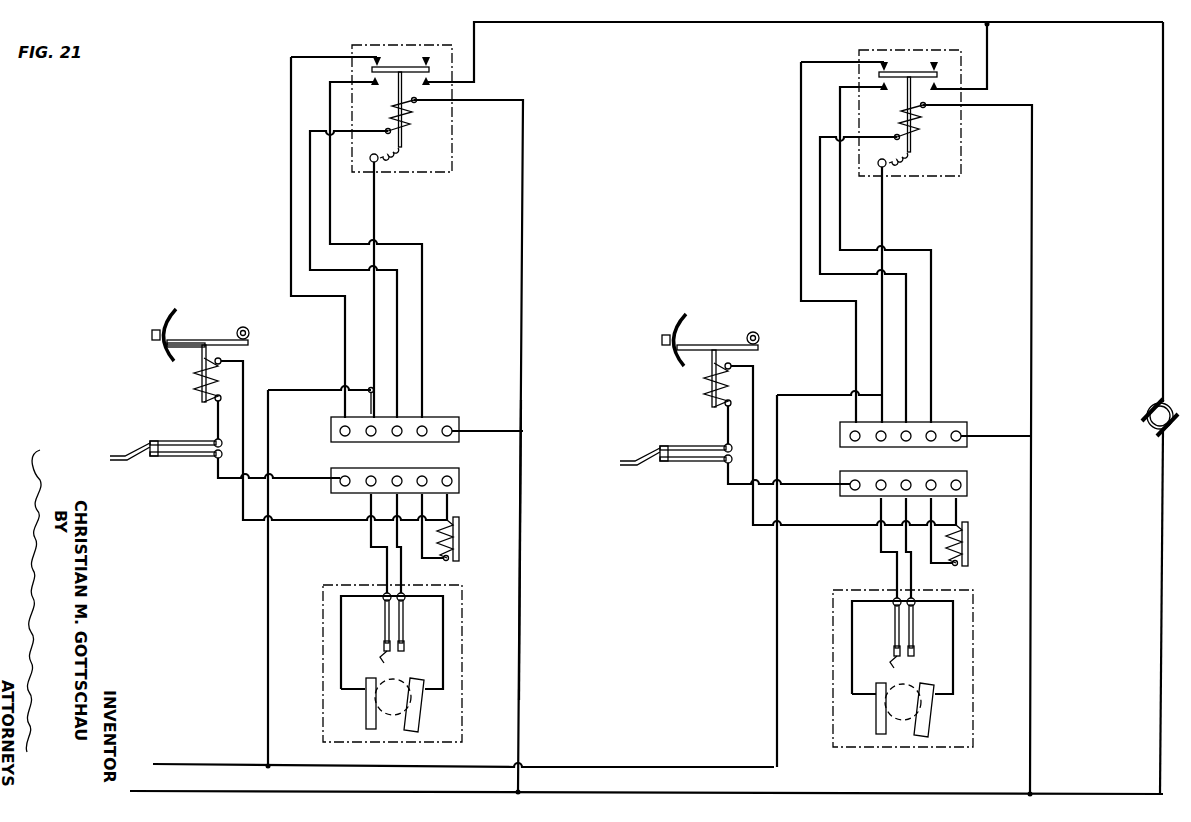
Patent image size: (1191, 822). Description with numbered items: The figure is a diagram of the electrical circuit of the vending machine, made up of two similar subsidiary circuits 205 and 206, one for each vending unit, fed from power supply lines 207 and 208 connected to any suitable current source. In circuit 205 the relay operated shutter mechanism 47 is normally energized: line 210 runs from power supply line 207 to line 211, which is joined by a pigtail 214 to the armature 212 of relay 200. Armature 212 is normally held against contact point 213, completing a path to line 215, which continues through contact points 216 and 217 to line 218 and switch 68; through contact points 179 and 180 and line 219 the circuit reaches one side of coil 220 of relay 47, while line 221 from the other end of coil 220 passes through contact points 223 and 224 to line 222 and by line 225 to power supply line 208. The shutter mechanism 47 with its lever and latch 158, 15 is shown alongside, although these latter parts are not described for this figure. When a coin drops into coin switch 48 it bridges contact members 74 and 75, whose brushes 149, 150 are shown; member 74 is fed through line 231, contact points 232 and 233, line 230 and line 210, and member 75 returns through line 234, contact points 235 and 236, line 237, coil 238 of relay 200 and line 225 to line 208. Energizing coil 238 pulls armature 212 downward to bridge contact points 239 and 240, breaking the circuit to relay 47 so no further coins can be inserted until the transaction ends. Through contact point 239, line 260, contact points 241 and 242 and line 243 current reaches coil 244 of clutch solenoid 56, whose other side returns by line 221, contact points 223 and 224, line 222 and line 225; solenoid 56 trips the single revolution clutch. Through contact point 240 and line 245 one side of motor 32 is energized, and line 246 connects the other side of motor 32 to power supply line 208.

The relay 200 is at (352, 46).
The contact point 213 is at (378, 56).
The contact point 240 is at (430, 80).
The line 260 is at (330, 110).
The contact point 239 is at (395, 112).
The armature 212 is at (418, 102).
The coil 238 is at (404, 122).
The pigtail 214 is at (398, 152).
The line 215 is at (290, 150).
The subsidiary circuit 205 is at (526, 214).
The line 211 is at (376, 205).
The line 237 is at (347, 273).
The latch 15 is at (158, 332).
The lever arm 158 is at (183, 340).
The relay operated shutter mechanism 47 is at (221, 335).
The coil 220 is at (198, 370).
The contact point 179 is at (160, 441).
The line 219 is at (217, 418).
The switch 68 is at (149, 452).
The contact point 180 is at (158, 460).
The line 218 is at (218, 495).
The contact point 216 is at (341, 429).
The line 230 is at (371, 418).
The contact point 236 is at (402, 428).
The contact point 224 is at (453, 428).
The line 222 is at (524, 428).
The contact point 232 is at (368, 438).
The contact point 241 is at (428, 436).
The contact point 233 is at (368, 476).
The contact point 235 is at (402, 476).
The contact point 242 is at (428, 477).
The contact point 217 is at (340, 484).
The contact point 223 is at (455, 484).
The line 243 is at (422, 496).
The line 221 is at (450, 512).
The clutch solenoid 56 is at (484, 529).
The coil 244 is at (462, 545).
The line 231 is at (386, 571).
The line 234 is at (403, 571).
The line 210 is at (266, 585).
The coin switch 48 is at (323, 639).
The brush 149 is at (384, 643).
The brush 150 is at (403, 643).
The contact member 74 is at (366, 706).
The contact member 75 is at (420, 714).
The power supply line 207 is at (245, 765).
The power supply line 208 is at (195, 791).
The line 225 is at (523, 631).
The line 245 is at (712, 27).
The subsidiary circuit 206 is at (1058, 273).
The motor 32 is at (1145, 422).
The line 246 is at (1160, 552).